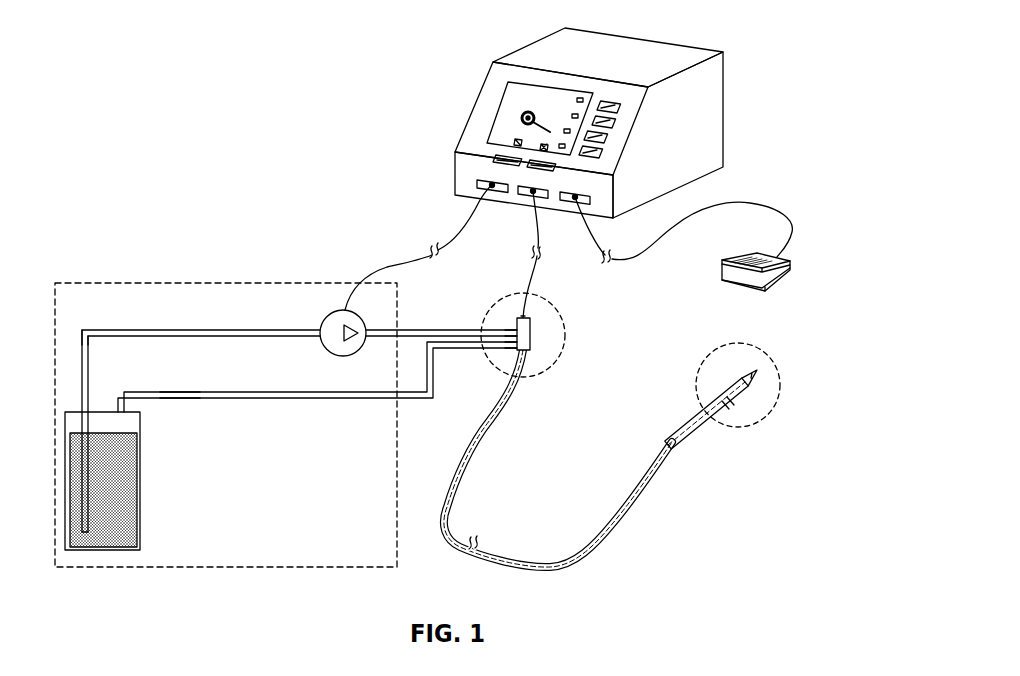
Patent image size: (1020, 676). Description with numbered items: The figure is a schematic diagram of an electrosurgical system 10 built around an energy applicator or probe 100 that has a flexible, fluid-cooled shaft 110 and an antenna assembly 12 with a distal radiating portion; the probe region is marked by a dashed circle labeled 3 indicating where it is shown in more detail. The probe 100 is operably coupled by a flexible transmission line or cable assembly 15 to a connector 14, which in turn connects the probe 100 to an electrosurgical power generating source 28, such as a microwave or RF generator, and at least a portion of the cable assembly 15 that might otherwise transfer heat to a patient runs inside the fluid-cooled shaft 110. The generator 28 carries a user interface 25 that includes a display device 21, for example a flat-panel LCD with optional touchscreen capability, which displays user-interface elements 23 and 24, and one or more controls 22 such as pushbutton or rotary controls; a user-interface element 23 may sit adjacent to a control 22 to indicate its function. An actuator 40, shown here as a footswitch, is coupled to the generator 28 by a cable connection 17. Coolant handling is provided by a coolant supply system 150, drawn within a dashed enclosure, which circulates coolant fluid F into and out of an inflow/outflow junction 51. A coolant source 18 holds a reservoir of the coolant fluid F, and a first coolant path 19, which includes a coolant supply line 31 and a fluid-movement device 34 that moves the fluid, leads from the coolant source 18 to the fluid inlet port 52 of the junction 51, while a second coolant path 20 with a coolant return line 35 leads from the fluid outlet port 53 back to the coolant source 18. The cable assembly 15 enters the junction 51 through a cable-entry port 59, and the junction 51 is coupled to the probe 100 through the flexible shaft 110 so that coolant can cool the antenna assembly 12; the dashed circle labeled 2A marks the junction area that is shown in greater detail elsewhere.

The electrosurgical system 10 is at (317, 75).
The electrosurgical power generating source 28 is at (533, 35).
The user interface 25 is at (613, 92).
The display device 21 is at (522, 97).
The user-interface element 24 is at (522, 115).
The user-interface element 23 is at (562, 145).
The control 22 is at (600, 149).
The connector 14 is at (532, 191).
The transmission line (cable assembly) 15 is at (530, 277).
The cable connection 17 is at (755, 202).
The actuator 40 is at (747, 255).
The coolant supply system 150 is at (132, 282).
The first coolant path 19 is at (145, 320).
The coolant supply line 31 is at (253, 330).
The second coolant path 20 is at (168, 387).
The coolant return line 35 is at (266, 392).
The coolant source 18 is at (142, 517).
The coolant fluid F is at (128, 470).
The fluid-movement device 34 is at (342, 357).
The inflow/outflow junction 51 is at (531, 337).
The fluid inlet port 52 is at (512, 323).
The fluid outlet port 53 is at (513, 348).
The cable-entry port 59 is at (533, 313).
The detail view 2A is at (565, 323).
The flexible, fluid-cooled shaft 110 is at (622, 505).
The energy applicator (probe) 100 is at (728, 377).
The antenna assembly 12 is at (750, 385).
The detail view 3 is at (783, 385).